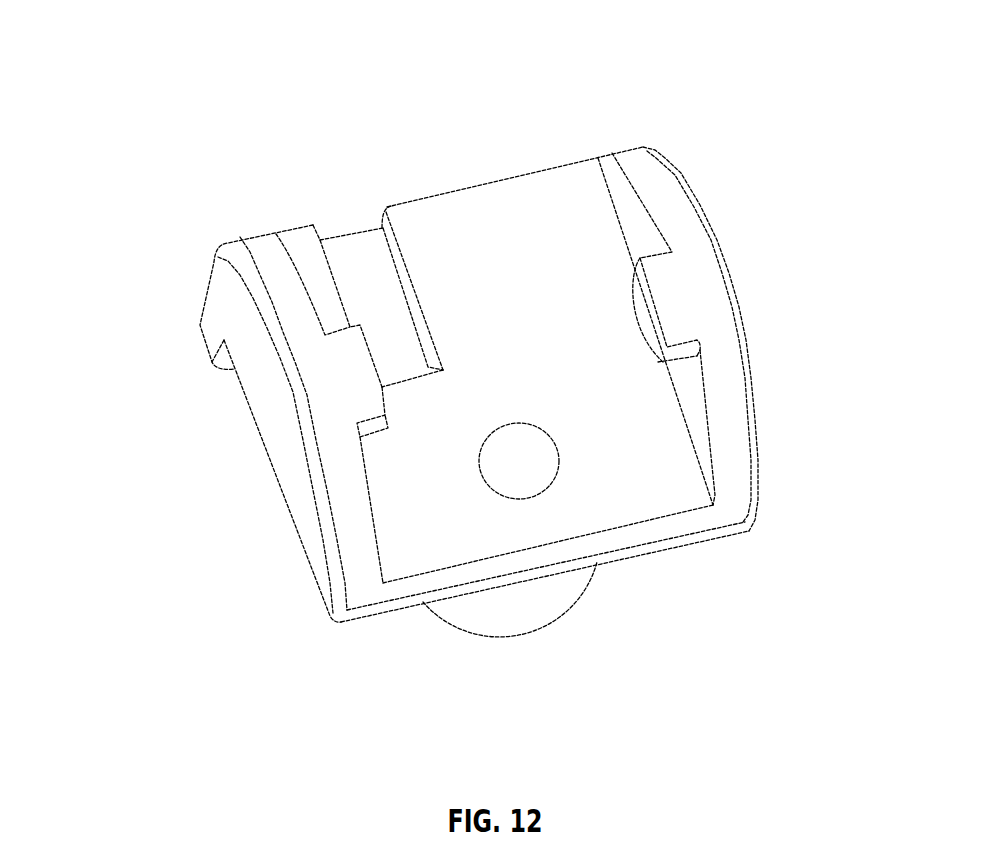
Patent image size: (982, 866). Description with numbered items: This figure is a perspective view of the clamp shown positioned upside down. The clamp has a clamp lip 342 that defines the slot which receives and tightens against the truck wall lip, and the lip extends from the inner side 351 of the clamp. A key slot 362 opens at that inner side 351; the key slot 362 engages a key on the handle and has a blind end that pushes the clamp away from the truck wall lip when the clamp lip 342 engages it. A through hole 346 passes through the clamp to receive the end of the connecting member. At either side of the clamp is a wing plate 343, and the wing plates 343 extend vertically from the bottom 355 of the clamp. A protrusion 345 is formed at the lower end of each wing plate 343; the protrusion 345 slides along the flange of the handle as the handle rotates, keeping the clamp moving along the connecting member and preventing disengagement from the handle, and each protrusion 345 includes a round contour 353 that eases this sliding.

The inner side 351 is at (475, 182).
The key slot 362 is at (357, 247).
The round contour 353 is at (635, 301).
The protrusion 345 is at (370, 403).
The wing plate 343 is at (358, 506).
The clamp lip 342 is at (215, 363).
The through hole 346 is at (515, 460).
The bottom 355 is at (655, 427).